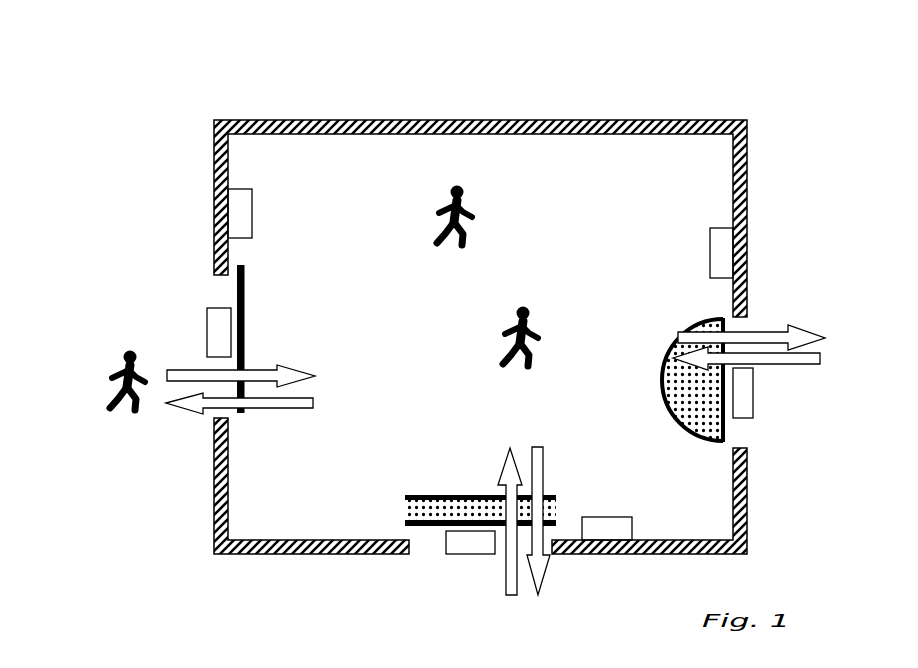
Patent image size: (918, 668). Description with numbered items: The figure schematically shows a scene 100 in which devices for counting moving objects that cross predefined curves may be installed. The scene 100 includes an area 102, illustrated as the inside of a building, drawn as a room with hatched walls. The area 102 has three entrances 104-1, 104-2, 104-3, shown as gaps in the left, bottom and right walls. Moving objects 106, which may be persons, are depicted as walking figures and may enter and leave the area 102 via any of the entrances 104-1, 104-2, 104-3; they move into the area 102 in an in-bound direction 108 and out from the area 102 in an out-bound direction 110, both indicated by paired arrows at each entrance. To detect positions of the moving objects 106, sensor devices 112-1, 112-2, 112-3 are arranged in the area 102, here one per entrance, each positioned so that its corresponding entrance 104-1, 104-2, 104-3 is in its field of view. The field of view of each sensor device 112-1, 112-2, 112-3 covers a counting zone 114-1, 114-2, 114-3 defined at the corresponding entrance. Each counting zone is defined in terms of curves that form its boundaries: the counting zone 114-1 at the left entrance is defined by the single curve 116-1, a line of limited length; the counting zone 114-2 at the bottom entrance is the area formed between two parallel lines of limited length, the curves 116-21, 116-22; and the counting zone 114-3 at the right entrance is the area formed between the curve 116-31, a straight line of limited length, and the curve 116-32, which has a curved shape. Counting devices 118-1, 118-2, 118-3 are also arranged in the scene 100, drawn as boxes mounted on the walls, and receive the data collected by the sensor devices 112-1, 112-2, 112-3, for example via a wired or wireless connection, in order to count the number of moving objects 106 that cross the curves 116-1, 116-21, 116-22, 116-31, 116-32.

The scene 100 is at (265, 93).
The area 102 is at (686, 187).
The entrance 104-1 is at (222, 289).
The entrance 104-2 is at (432, 547).
The entrance 104-3 is at (740, 323).
The moving objects 106 is at (448, 195).
The in-bound direction 108 is at (212, 377).
The out-bound direction 110 is at (202, 406).
The sensor device 112-1 is at (225, 337).
The sensor device 112-2 is at (455, 548).
The sensor device 112-3 is at (747, 391).
The counting zone 114-1 is at (244, 282).
The counting zone 114-2 is at (453, 512).
The counting zone 114-3 is at (678, 386).
The curve 116-1 is at (244, 340).
The curve 116-21 is at (405, 523).
The curve 116-22 is at (405, 497).
The curve 116-31 is at (725, 423).
The curve 116-32 is at (669, 353).
The counting device 118-1 is at (245, 206).
The counting device 118-2 is at (612, 530).
The counting device 118-3 is at (718, 267).